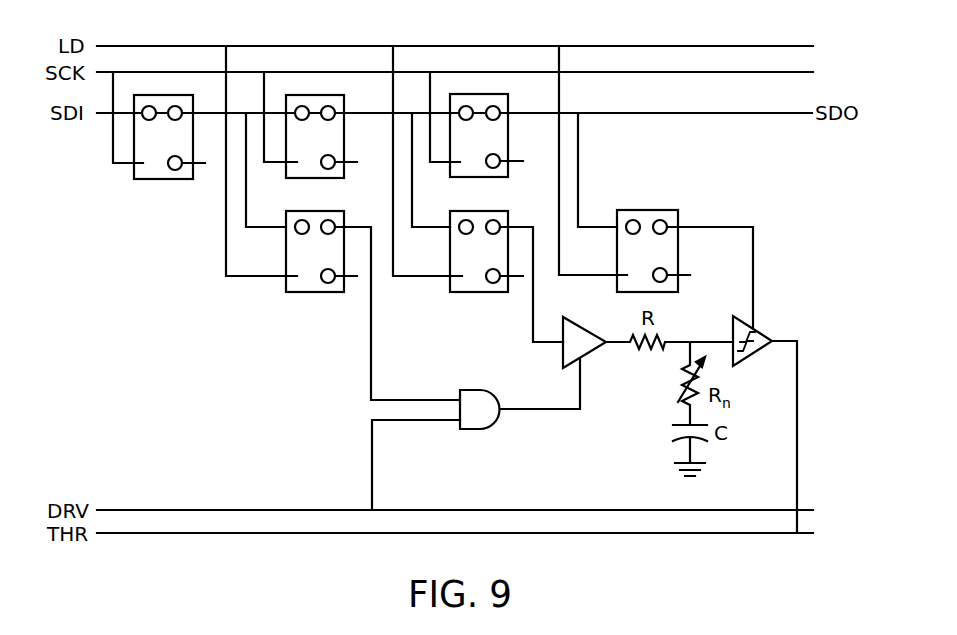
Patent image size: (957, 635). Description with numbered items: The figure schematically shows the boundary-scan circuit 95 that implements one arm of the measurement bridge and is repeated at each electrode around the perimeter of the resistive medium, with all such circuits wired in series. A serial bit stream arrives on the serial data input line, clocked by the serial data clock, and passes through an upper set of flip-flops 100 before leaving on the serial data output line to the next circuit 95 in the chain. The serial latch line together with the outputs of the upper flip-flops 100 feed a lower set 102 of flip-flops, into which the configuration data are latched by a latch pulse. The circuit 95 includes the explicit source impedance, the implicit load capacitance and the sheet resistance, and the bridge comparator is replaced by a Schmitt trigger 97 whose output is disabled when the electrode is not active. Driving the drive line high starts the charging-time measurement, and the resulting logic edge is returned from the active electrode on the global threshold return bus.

The boundary-scan circuit 95 is at (451, 289).
The Schmitt trigger 97 is at (766, 330).
The upper set of flip-flops 100 is at (158, 194).
The lower set of flip-flops 102 is at (314, 309).